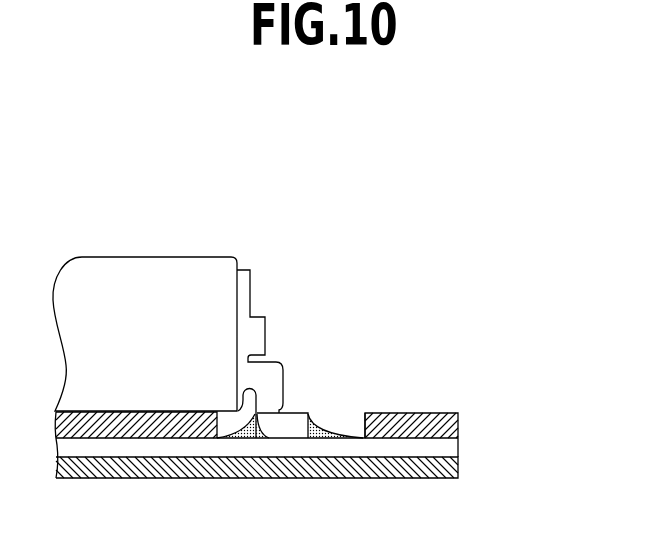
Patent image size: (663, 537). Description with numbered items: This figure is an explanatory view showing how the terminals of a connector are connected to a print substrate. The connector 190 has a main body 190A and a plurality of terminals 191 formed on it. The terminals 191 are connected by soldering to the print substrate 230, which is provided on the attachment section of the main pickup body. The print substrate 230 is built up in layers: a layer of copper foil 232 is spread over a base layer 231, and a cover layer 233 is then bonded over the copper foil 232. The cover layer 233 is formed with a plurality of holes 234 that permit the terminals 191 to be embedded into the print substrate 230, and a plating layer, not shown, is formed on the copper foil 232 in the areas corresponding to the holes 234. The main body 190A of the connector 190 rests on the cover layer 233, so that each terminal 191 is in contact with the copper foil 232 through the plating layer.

The connector 190 is at (203, 294).
The main body 190A is at (154, 310).
The terminal 191 is at (295, 354).
The print substrate 230 is at (314, 429).
The base layer 231 is at (285, 485).
The copper foil 232 is at (303, 452).
The cover layer 233 is at (442, 391).
The hole 234 is at (361, 391).